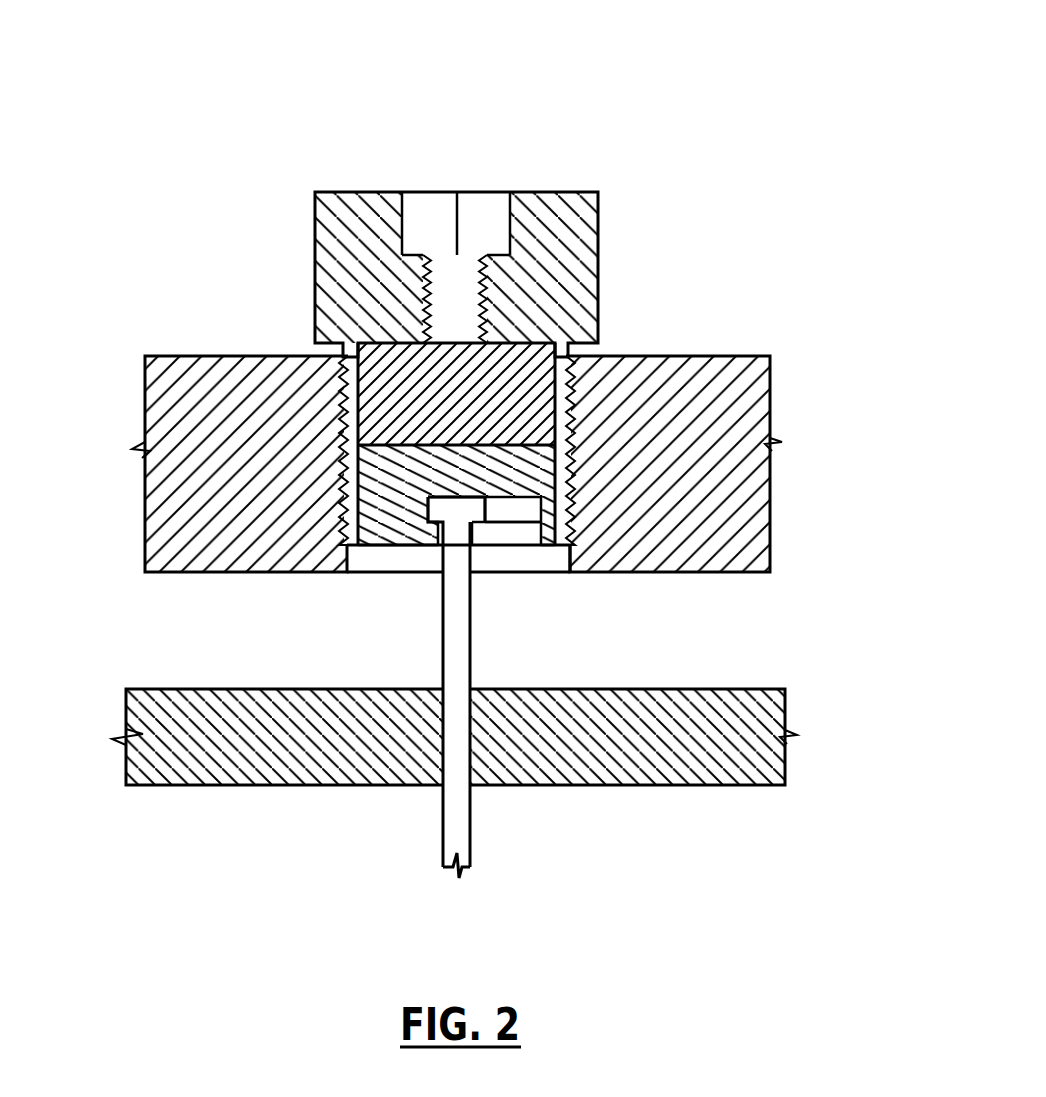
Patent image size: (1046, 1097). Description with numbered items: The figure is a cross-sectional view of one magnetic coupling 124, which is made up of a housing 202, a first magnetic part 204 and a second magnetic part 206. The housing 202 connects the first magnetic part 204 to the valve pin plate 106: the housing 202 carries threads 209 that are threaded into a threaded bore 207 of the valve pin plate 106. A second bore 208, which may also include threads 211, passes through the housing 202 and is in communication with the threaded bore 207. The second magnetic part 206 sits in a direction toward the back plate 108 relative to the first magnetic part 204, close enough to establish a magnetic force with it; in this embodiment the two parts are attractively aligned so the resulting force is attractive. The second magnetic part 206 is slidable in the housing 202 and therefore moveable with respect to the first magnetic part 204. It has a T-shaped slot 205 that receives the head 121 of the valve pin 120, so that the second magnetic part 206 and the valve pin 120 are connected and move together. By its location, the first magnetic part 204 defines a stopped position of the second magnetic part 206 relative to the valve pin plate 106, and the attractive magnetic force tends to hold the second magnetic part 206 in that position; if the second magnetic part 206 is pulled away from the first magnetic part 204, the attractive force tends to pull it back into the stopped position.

The valve pin plate 106 is at (183, 385).
The back plate 108 is at (707, 707).
The valve pin 120 is at (458, 824).
The head 121 is at (487, 517).
The magnetic coupling 124 is at (451, 334).
The housing 202 is at (600, 249).
The first magnetic part 204 is at (523, 377).
The T-shaped slot 205 is at (535, 512).
The second magnetic part 206 is at (382, 523).
The threaded bore 207 is at (347, 494).
The second bore 208 is at (473, 282).
The threads 209 is at (343, 432).
The threads 211 is at (433, 313).